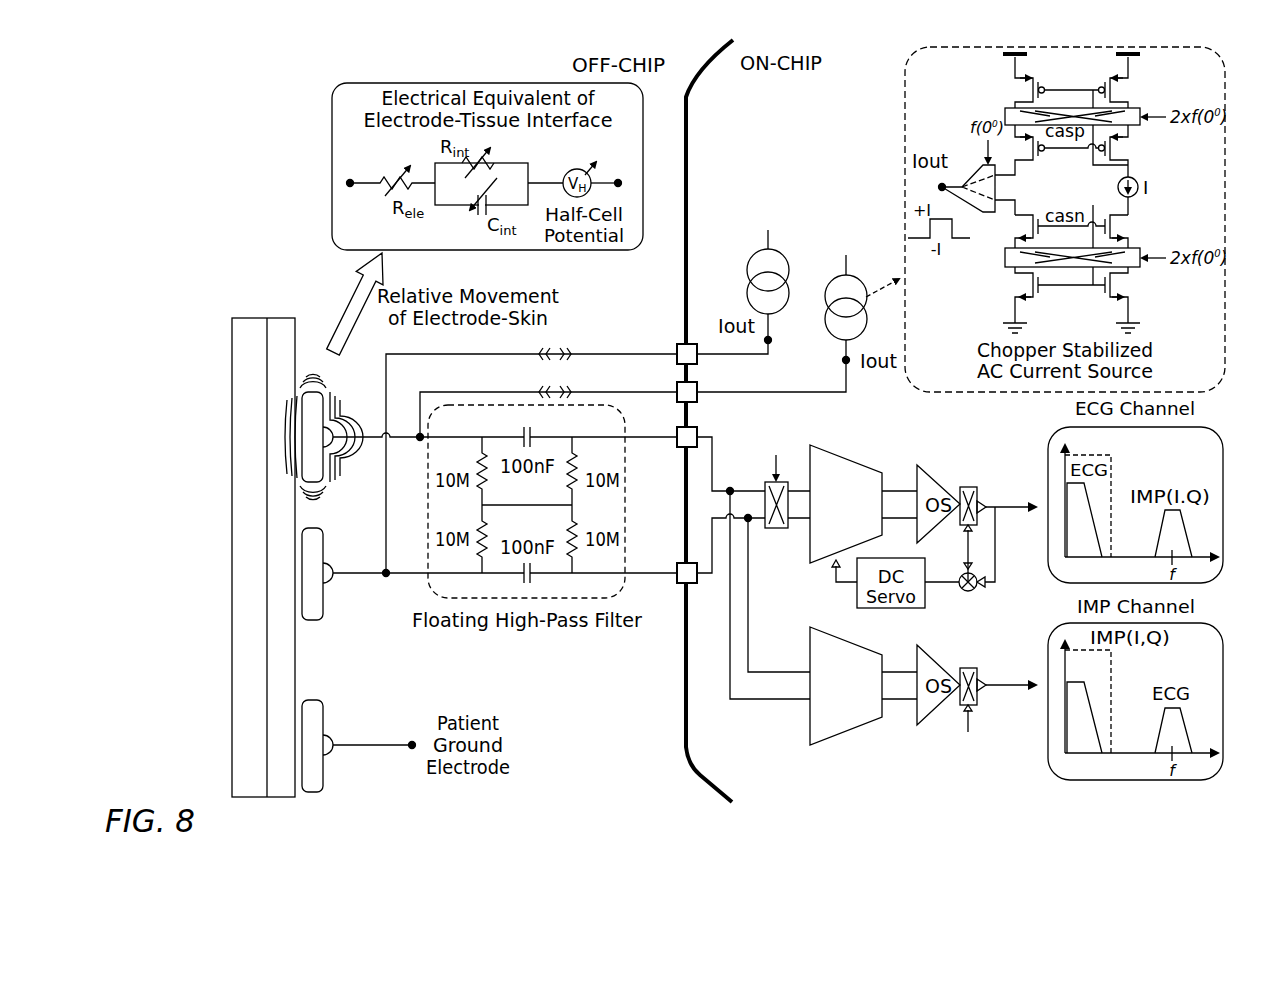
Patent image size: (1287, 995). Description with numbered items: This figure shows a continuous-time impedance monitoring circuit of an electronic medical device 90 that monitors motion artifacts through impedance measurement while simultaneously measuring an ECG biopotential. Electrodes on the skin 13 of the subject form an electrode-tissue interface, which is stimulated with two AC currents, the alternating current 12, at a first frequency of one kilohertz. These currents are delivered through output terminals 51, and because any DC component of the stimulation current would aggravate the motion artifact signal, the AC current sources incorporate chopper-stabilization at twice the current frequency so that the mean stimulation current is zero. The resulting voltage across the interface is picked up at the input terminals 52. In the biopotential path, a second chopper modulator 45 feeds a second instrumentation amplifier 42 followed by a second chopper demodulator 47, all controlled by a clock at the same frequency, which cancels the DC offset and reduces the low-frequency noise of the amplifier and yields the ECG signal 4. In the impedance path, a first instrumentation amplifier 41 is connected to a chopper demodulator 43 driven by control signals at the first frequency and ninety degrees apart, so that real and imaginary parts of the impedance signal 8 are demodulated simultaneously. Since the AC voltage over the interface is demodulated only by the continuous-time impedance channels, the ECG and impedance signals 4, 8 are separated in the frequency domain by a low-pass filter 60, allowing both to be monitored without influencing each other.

The biopotential signal 4 is at (1005, 508).
The impedance signal 8 is at (1005, 686).
The alternating current 12 is at (572, 350).
The skin 13 is at (285, 797).
The first instrumentation amplifier 41 is at (840, 735).
The second instrumentation amplifier 42 is at (855, 454).
The demodulator 43 is at (968, 665).
The second chopper modulator 45 is at (776, 530).
The second chopper demodulator 47 is at (968, 485).
The output terminals 51 is at (677, 384).
The input terminals 52 is at (680, 562).
The low-pass filter 60 is at (1111, 480).
The electronic medical device 90 is at (697, 770).